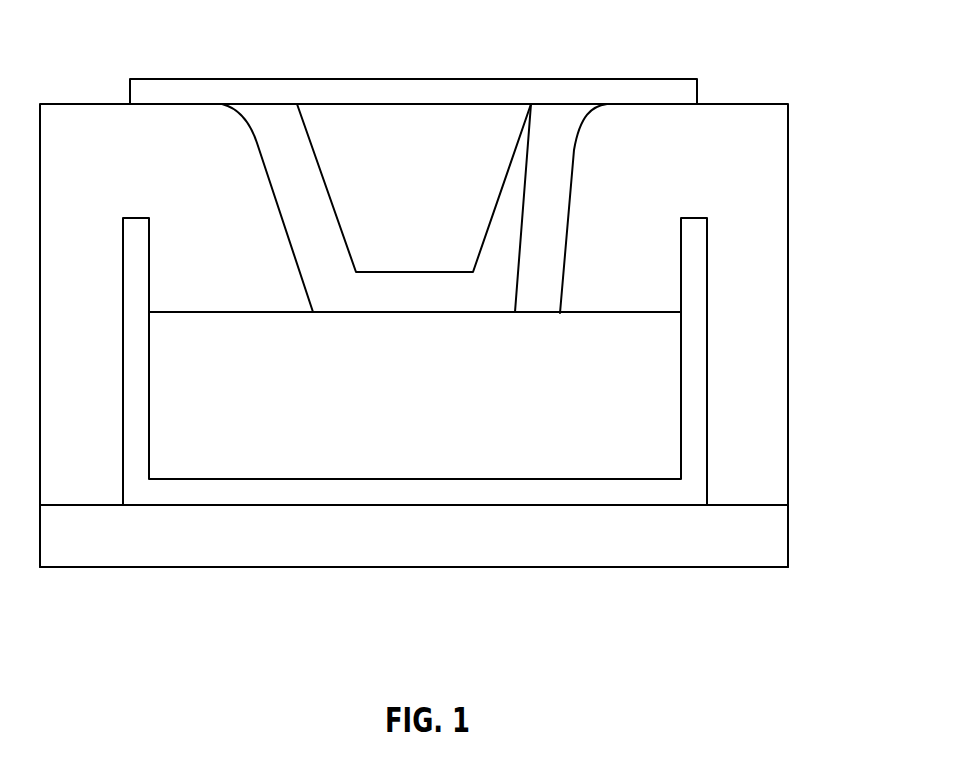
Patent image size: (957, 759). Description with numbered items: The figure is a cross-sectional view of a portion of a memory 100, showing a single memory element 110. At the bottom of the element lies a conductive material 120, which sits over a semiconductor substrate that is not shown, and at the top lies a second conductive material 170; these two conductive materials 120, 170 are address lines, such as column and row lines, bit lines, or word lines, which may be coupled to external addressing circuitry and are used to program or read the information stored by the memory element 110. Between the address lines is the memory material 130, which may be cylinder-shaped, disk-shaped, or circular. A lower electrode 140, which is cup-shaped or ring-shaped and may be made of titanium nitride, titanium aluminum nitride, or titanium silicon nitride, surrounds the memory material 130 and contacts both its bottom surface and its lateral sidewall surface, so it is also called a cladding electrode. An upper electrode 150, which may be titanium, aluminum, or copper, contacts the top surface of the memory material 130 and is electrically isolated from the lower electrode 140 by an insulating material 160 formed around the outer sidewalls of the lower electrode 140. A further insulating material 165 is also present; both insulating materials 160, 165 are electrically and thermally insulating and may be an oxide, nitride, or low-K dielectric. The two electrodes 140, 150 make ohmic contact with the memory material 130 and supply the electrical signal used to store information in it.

The memory 100 is at (611, 673).
The memory element 110 is at (700, 604).
The conductive material 120 is at (452, 534).
The memory material 130 is at (481, 187).
The electrode 140 is at (493, 361).
The electrode 150 is at (568, 166).
The insulating material 160 is at (454, 335).
The insulating material 165 is at (414, 155).
The conductive material 170 is at (413, 72).